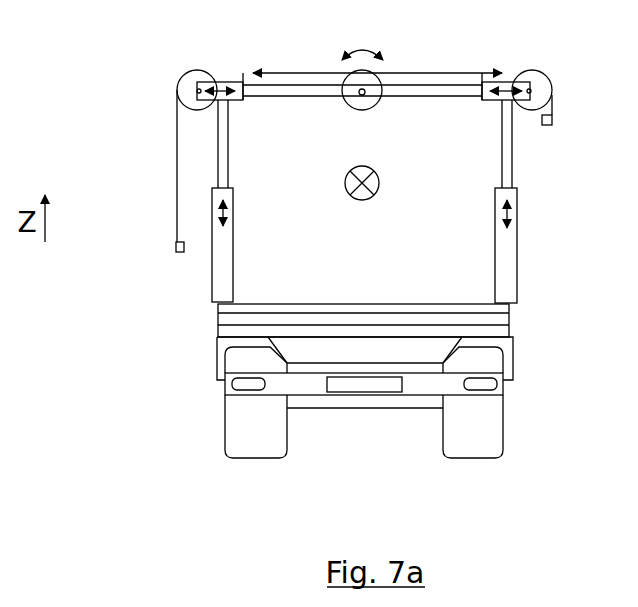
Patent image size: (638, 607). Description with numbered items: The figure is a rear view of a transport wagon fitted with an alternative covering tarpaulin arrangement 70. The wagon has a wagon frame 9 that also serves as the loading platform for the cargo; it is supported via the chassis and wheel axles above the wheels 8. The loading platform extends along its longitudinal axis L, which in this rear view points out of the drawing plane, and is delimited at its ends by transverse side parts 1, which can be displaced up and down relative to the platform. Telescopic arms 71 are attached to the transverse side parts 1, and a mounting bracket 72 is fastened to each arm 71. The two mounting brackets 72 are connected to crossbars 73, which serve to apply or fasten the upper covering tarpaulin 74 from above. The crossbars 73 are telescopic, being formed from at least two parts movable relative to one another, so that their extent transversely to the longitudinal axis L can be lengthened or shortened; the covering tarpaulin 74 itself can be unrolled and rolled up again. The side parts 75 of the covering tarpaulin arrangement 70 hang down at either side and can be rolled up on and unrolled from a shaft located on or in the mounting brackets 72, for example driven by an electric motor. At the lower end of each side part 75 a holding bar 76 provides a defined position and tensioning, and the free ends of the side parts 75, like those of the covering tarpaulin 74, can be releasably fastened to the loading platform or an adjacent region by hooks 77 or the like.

The transverse side part 1 is at (529, 262).
The wheels 8 is at (257, 443).
The wagon frame 9 is at (504, 330).
The covering tarpaulin arrangement 70 is at (507, 52).
The telescopic arms 71 is at (517, 188).
The mounting bracket 72 is at (546, 69).
The crossbars 73 is at (417, 90).
The covering tarpaulin 74 is at (292, 70).
The side parts 75 is at (552, 98).
The holding bar 76 is at (553, 124).
The hooks 77 is at (260, 79).
The longitudinal axis L is at (346, 175).